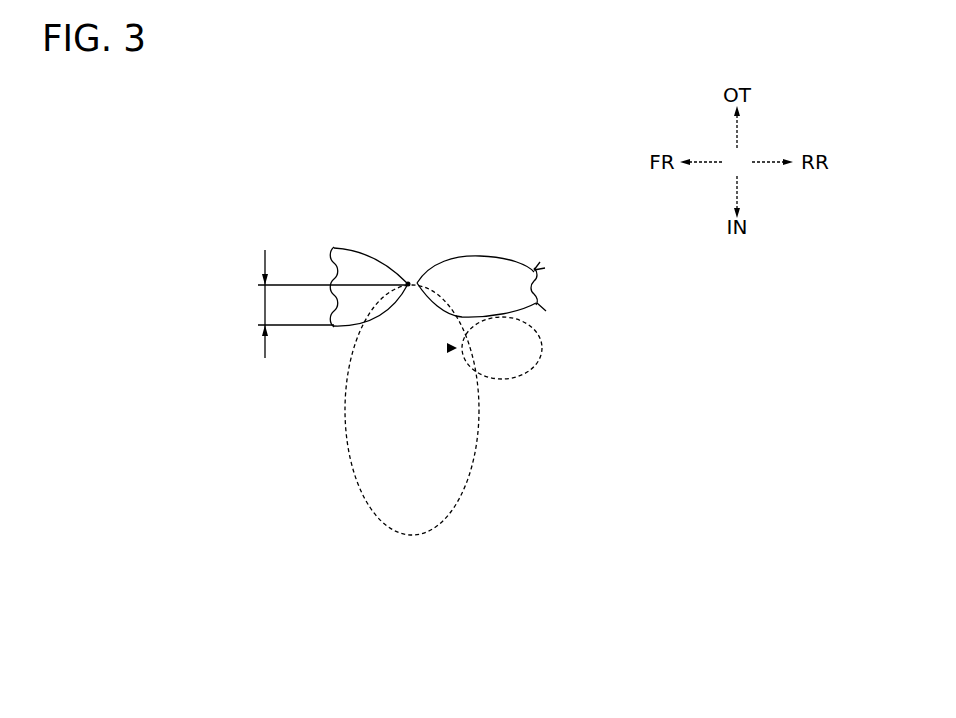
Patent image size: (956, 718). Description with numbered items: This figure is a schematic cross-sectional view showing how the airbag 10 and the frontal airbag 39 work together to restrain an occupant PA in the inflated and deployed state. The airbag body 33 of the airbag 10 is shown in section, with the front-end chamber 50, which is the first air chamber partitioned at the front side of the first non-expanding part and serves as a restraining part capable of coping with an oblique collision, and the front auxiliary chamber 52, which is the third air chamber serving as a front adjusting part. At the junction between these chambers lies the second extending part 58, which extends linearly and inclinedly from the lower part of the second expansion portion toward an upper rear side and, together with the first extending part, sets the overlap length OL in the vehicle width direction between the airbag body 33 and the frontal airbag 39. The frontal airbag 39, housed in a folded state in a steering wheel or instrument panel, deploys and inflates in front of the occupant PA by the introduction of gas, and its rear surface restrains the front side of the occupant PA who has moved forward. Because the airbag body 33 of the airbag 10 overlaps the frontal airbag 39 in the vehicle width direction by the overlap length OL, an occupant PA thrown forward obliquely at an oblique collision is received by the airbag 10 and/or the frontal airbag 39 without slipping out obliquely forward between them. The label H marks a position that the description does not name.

The airbag 10 is at (437, 206).
The front-end chamber 50 is at (351, 258).
The front auxiliary chamber 52 is at (470, 270).
The second extending part 58 is at (408, 282).
The airbag body 33 is at (517, 268).
The frontal airbag 39 is at (410, 537).
The overlap length OL is at (316, 304).
The occupant PA is at (560, 355).
The hole H is at (527, 381).